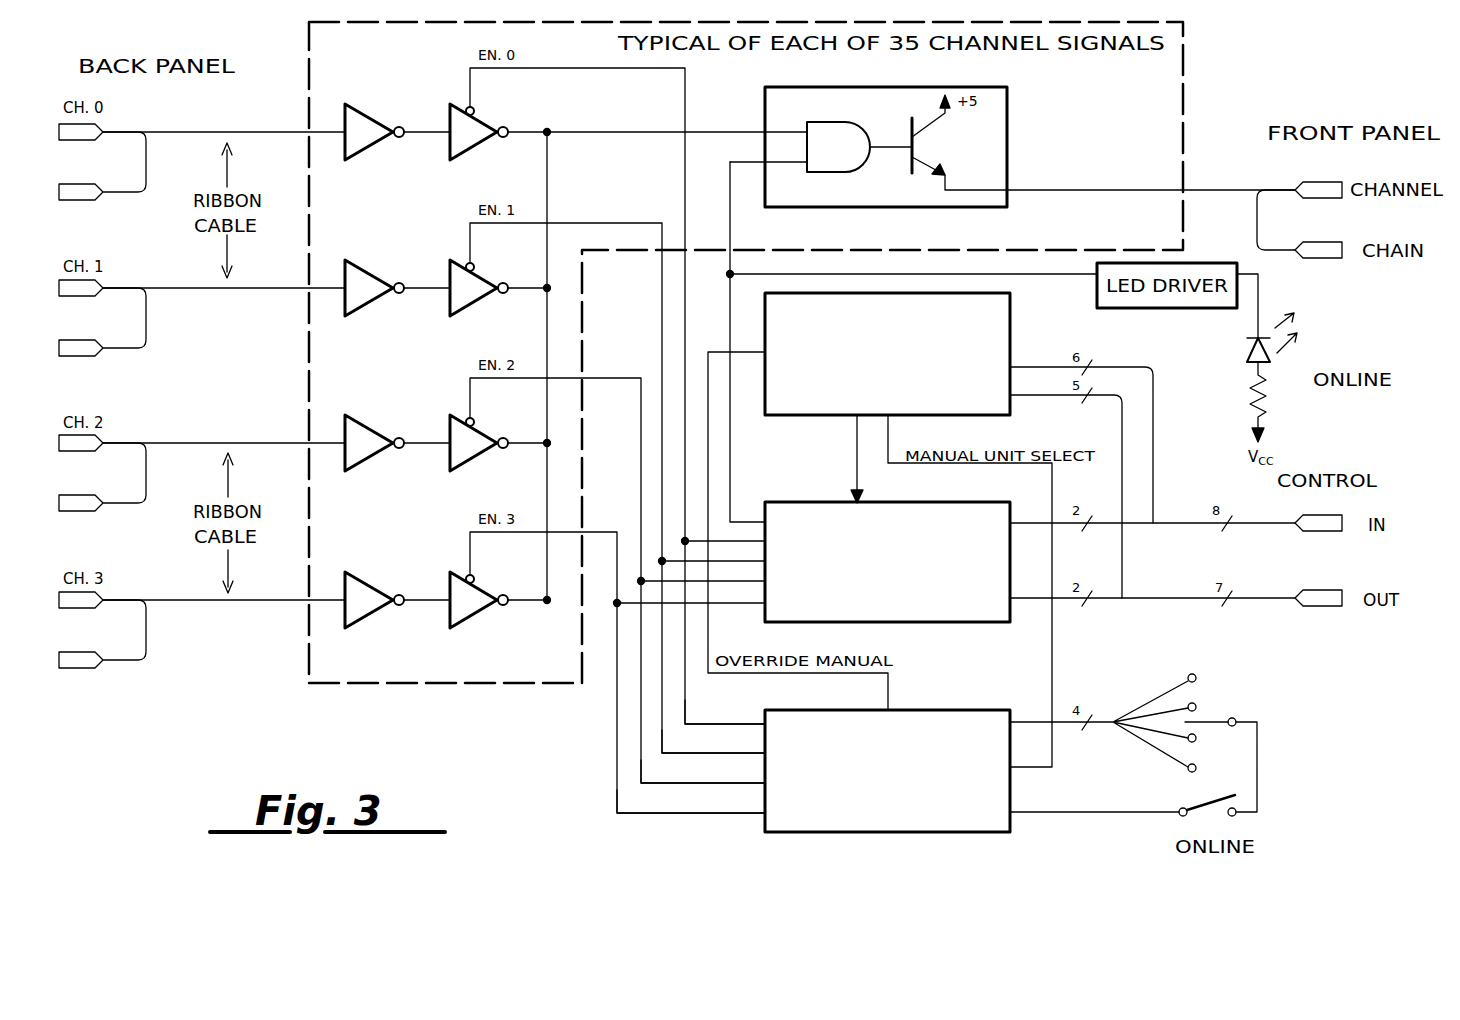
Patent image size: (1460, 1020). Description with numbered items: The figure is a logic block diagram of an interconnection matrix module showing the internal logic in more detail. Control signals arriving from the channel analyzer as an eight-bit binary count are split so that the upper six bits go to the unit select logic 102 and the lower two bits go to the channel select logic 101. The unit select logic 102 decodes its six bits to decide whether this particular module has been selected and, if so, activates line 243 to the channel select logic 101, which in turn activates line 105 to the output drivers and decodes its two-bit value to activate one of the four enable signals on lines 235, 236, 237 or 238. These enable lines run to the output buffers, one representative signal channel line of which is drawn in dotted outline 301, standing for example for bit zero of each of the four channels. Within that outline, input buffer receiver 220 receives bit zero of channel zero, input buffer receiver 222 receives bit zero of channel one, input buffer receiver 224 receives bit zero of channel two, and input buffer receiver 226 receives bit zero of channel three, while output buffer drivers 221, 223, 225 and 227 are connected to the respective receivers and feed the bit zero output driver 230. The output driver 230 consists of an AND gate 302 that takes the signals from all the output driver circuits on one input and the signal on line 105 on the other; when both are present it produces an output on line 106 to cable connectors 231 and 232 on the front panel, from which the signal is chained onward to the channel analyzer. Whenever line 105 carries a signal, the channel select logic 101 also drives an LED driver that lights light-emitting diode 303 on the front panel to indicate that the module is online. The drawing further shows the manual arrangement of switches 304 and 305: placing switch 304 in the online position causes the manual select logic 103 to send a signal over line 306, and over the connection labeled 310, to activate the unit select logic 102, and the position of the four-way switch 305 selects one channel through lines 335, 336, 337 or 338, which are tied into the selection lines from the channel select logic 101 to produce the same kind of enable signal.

The input buffer receiver 220 is at (360, 106).
The output buffer driver 221 is at (484, 121).
The input buffer receiver 222 is at (360, 262).
The output buffer driver 223 is at (474, 277).
The input buffer receiver 224 is at (360, 417).
The output buffer driver 225 is at (474, 432).
The input buffer receiver 226 is at (360, 574).
The output buffer driver 227 is at (474, 589).
The enable signal line 238 is at (563, 70).
The enable signal line 237 is at (566, 223).
The enable signal line 236 is at (592, 378).
The enable signal line 235 is at (592, 532).
The output driver 230 is at (868, 134).
The AND gate 302 is at (838, 147).
The line 105 is at (730, 241).
The line 106 is at (1065, 190).
The cable connector 231 is at (1320, 186).
The cable connector 232 is at (1320, 248).
The unit select logic 102 is at (1012, 338).
The channel select logic 101 is at (838, 500).
The line 243 is at (857, 467).
The light-emitting diode 303 is at (1297, 368).
The manual select logic 103 is at (932, 710).
The line 306 is at (1052, 681).
The switch 305 is at (1241, 708).
The online control line 310 is at (1075, 812).
The switch 304 is at (1222, 828).
The signal line 338 is at (740, 735).
The signal line 337 is at (740, 764).
The signal line 336 is at (740, 794).
The signal line 335 is at (740, 824).
The dotted outline 301 is at (458, 686).